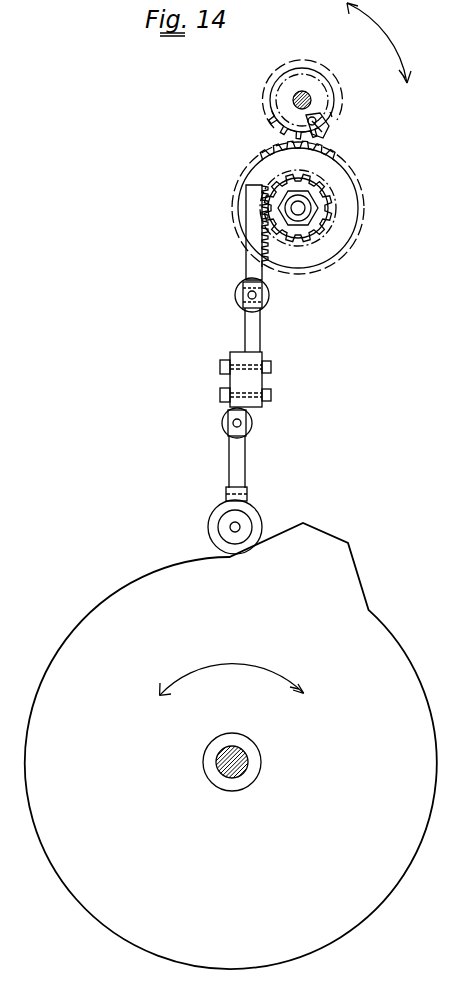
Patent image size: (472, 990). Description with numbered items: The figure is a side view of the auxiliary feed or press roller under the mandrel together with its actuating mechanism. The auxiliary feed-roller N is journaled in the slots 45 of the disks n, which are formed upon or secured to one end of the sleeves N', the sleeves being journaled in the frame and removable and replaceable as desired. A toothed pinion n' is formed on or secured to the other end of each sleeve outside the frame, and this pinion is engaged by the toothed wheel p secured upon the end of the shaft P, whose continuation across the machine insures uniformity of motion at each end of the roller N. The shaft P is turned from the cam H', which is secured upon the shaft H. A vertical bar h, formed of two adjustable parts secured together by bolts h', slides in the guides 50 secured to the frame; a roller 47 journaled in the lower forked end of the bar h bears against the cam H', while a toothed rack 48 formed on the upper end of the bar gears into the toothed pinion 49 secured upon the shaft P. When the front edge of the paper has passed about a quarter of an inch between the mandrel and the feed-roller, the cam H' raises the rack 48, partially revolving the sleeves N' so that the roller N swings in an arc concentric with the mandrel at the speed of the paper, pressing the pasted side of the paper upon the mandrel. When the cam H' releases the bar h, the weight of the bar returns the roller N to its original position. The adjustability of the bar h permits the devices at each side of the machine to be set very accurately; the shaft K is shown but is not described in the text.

The shaft K is at (300, 100).
The toothed pinion n' is at (311, 89).
The disk n is at (318, 103).
The sleeve N' is at (275, 94).
The auxiliary feed-roller N is at (363, 113).
The slot 45 is at (330, 133).
The toothed wheel p is at (352, 212).
The toothed pinion 49 is at (266, 205).
The shaft P is at (299, 212).
The toothed rack 48 is at (256, 243).
The guide 50 is at (240, 295).
The vertical bar h is at (255, 398).
The bolt h' is at (256, 379).
The roller 47 is at (252, 513).
The cam H' is at (231, 746).
The shaft H is at (248, 762).